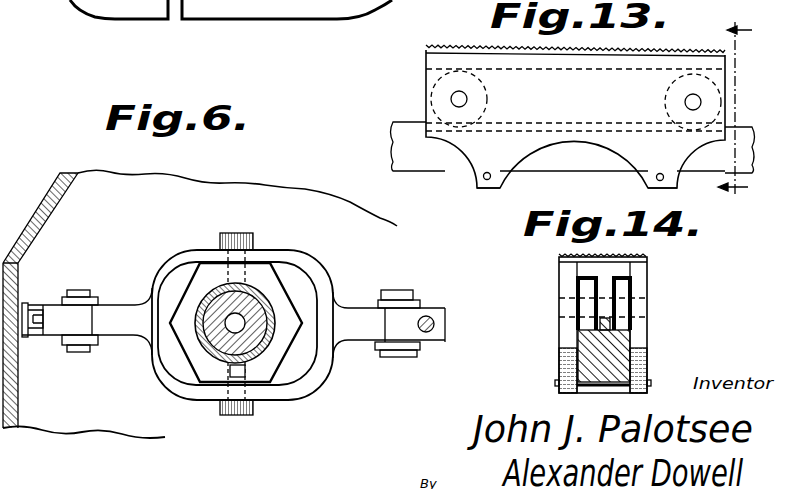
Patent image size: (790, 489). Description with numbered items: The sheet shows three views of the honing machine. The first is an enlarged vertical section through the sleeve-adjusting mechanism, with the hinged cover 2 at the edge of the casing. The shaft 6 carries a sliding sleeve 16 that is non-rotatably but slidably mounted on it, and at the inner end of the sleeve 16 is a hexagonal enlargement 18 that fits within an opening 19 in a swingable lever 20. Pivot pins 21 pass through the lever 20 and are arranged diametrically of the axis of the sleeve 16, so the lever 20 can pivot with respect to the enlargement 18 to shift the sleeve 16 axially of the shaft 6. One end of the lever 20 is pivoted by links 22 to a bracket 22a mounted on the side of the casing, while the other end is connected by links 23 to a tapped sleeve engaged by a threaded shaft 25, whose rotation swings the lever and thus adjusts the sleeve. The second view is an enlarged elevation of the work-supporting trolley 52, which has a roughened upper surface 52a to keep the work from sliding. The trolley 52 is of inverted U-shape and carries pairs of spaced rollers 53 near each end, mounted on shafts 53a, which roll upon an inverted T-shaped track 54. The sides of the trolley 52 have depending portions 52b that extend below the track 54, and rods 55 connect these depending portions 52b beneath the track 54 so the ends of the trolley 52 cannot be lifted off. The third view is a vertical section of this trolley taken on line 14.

In FIG. 6, the cover 2 is at (53, 193).
In FIG. 6, the shaft 6 is at (253, 317).
In FIG. 6, the sliding sleeve 16 is at (205, 352).
In FIG. 6, the hexagonal enlargement 18 is at (257, 278).
In FIG. 6, the opening 19 is at (185, 260).
In FIG. 6, the swingable lever 20 is at (112, 307).
In FIG. 6, the pivot pins 21 is at (236, 233).
In FIG. 6, the links 22 is at (82, 290).
In FIG. 6, the bracket 22a is at (63, 322).
In FIG. 6, the links 23 is at (417, 300).
In FIG. 6, the threaded shaft 25 is at (435, 320).
In FIG. 13, the section line 14 is at (735, 108).
In FIG. 13, the trolley 52 is at (503, 78).
In FIG. 14, the trolley 52 is at (625, 268).
In FIG. 13, the roughened upper surface 52a is at (675, 50).
In FIG. 14, the roughened upper surface 52a is at (567, 255).
In FIG. 13, the depending portions 52b is at (644, 182).
In FIG. 14, the depending portions 52b is at (644, 372).
In FIG. 13, the rollers 53 is at (470, 103).
In FIG. 14, the rollers 53 is at (623, 287).
In FIG. 13, the shafts 53a is at (452, 99).
In FIG. 14, the shafts 53a is at (638, 300).
In FIG. 13, the track 54 is at (432, 153).
In FIG. 14, the track 54 is at (606, 355).
In FIG. 13, the rods 55 is at (485, 179).
In FIG. 14, the rods 55 is at (557, 383).